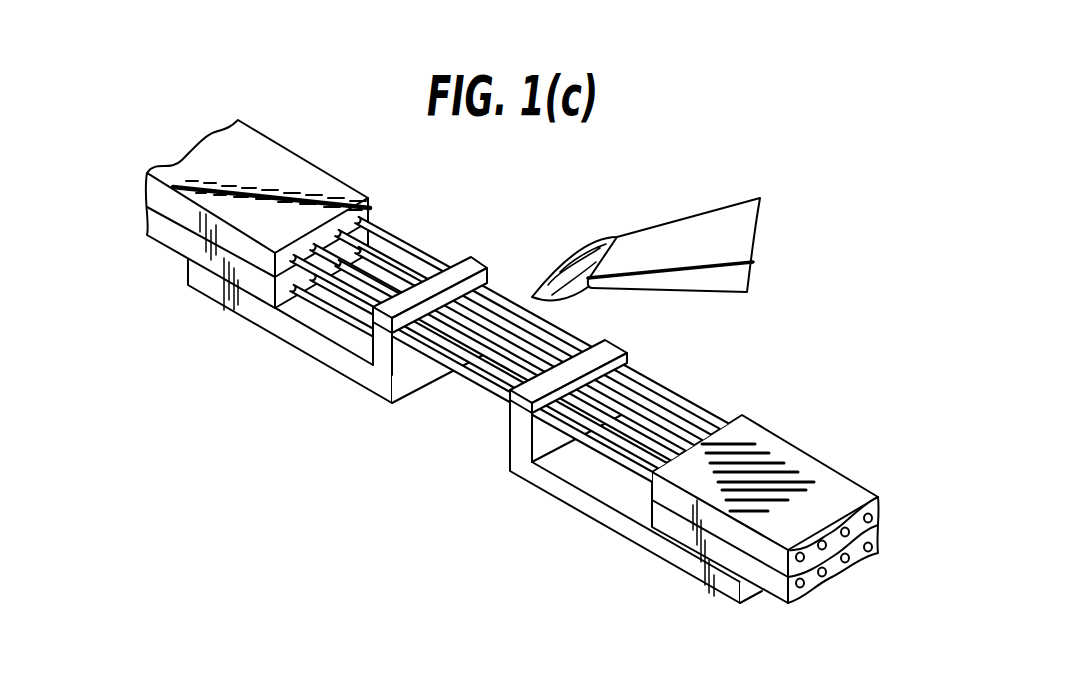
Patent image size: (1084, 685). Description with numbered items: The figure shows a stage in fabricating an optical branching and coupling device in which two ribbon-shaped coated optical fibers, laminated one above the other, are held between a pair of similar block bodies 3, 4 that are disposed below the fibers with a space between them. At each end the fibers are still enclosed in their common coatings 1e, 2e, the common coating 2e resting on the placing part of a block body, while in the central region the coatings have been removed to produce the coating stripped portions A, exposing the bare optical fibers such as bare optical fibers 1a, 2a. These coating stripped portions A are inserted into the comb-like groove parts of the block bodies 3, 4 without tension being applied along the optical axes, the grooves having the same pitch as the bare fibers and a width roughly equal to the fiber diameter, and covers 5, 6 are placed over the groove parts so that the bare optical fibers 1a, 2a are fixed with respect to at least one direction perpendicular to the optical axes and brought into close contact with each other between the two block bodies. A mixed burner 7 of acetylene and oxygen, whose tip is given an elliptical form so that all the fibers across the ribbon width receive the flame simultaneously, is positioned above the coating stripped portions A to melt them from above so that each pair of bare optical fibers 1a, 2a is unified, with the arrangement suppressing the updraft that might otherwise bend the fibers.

The common coating 1e is at (288, 168).
The common coating 2e is at (182, 238).
The bare optical fiber 1a is at (432, 367).
The bare optical fiber 2a is at (467, 380).
The block body 3 is at (312, 342).
The block body 4 is at (577, 497).
The cover 5 is at (462, 267).
The cover 6 is at (613, 340).
The mixed burner 7 is at (693, 233).
The coating stripped portions A is at (450, 392).